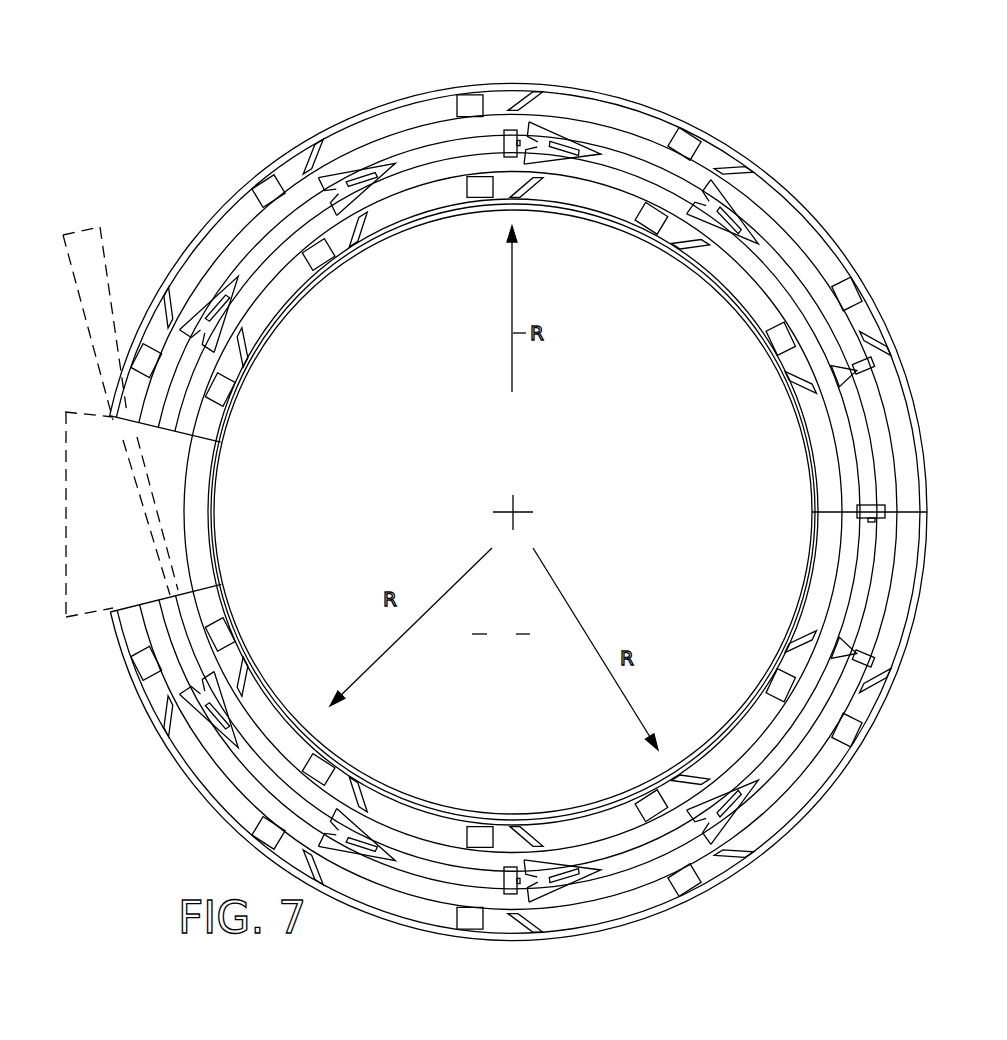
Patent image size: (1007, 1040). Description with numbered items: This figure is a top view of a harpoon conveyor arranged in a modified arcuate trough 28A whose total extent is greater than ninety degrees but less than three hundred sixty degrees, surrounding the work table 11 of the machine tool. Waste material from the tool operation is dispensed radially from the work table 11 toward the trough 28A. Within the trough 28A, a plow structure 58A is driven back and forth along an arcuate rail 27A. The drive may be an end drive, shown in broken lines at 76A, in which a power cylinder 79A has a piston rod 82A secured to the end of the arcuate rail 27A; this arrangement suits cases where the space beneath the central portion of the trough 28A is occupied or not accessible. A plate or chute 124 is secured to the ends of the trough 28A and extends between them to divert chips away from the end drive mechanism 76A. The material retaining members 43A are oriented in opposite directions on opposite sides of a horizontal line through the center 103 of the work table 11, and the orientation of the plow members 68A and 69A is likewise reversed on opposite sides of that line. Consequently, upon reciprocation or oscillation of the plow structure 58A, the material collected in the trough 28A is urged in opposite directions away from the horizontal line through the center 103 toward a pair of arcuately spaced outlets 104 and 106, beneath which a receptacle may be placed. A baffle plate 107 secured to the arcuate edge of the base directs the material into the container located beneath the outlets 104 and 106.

The arcuate trough 28A is at (207, 252).
The material retaining members 43A is at (471, 102).
The plow structure 58A is at (800, 268).
The plow member 68A is at (866, 385).
The plow member 69A is at (830, 388).
The end drive 76A is at (118, 290).
The power cylinder 79A is at (88, 372).
The piston rod 82A is at (152, 548).
The arcuate rail 27A is at (150, 440).
The center 103 is at (518, 508).
The outlet 104 is at (186, 428).
The outlet 106 is at (188, 602).
The baffle plate 107 is at (188, 513).
The plate or chute 124 is at (92, 618).
The work table 11 is at (501, 635).